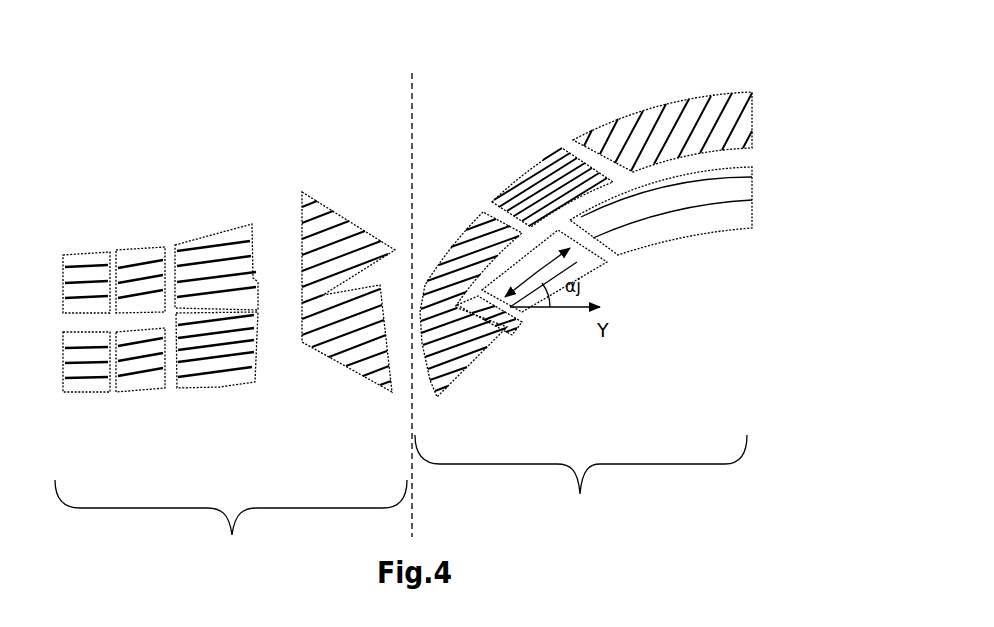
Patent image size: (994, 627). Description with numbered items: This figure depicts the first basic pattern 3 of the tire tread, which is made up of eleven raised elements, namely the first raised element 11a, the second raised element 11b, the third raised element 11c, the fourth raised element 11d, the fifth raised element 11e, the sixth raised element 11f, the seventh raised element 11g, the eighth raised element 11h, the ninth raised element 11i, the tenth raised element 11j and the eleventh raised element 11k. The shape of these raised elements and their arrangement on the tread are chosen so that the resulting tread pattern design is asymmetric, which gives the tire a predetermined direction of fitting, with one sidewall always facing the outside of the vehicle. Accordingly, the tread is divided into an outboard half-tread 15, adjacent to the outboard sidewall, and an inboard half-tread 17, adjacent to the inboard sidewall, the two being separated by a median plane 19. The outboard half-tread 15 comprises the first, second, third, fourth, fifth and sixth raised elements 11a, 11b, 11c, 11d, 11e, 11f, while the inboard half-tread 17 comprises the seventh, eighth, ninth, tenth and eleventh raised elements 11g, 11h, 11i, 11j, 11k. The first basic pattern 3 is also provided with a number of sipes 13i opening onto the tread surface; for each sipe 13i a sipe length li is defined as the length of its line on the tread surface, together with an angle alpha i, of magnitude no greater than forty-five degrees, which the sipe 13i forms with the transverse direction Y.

The first basic pattern 3 is at (275, 107).
The first raised element 11a is at (88, 253).
The second raised element 11b is at (87, 394).
The third raised element 11c is at (148, 247).
The fourth raised element 11d is at (149, 394).
The fifth raised element 11e is at (223, 238).
The sixth raised element 11f is at (335, 360).
The seventh raised element 11g is at (455, 237).
The eighth raised element 11h is at (517, 318).
The ninth raised element 11i is at (528, 167).
The tenth raised element 11j is at (688, 237).
The eleventh raised element 11k is at (655, 105).
The sipe 13i is at (578, 260).
The outboard half-tread 15 is at (231, 524).
The inboard half-tread 17 is at (581, 488).
The median plane 19 is at (415, 79).